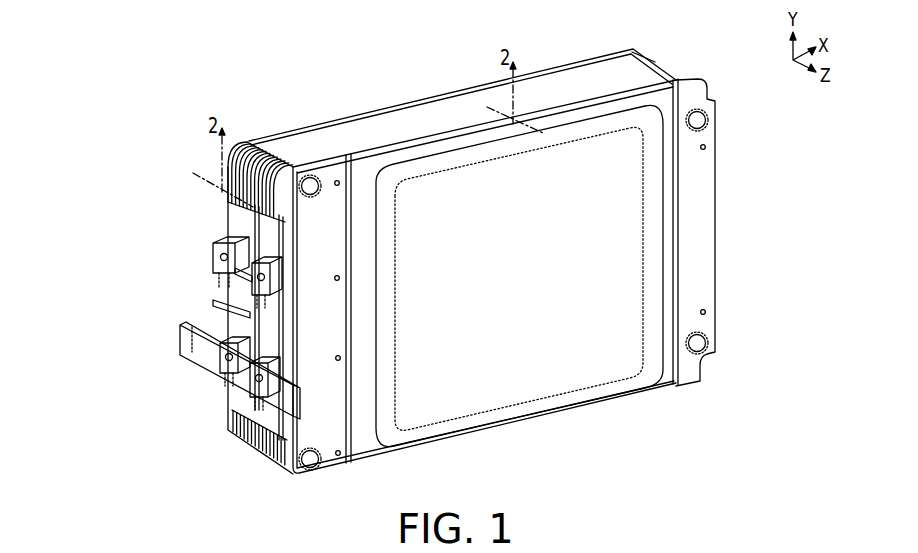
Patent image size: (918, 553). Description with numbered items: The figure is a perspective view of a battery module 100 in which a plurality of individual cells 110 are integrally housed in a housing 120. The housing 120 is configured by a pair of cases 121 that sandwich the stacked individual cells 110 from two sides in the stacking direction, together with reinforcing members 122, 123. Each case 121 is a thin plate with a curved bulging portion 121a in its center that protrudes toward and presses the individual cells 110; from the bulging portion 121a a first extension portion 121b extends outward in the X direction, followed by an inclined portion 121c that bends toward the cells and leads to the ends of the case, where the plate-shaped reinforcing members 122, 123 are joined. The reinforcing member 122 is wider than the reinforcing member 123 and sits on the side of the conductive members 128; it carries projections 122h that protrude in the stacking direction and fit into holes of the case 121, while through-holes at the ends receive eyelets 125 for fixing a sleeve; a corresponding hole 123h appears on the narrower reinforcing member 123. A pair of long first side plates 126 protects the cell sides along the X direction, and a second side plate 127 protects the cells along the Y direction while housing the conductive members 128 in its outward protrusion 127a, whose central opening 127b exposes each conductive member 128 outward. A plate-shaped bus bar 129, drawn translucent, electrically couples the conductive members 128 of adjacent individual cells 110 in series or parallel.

The battery module 100 is at (97, 35).
The individual cell 110 is at (237, 112).
The housing 120 is at (557, 68).
The case 121 is at (428, 100).
The bulging portion 121a is at (388, 250).
The first extension portion 121b is at (363, 300).
The inclined portion 121c is at (350, 347).
The reinforcing member 122 is at (330, 395).
The projection 122h is at (337, 180).
The reinforcing member 123 is at (690, 310).
The hole in right side wall 123h is at (705, 150).
The eyelet 125 is at (310, 175).
The first side plate 126 is at (640, 58).
The second side plate 127 is at (265, 408).
The protrusion 127a is at (236, 276).
The opening 127b is at (214, 302).
The conductive member 128 is at (212, 258).
The bus bar 129 is at (213, 245).